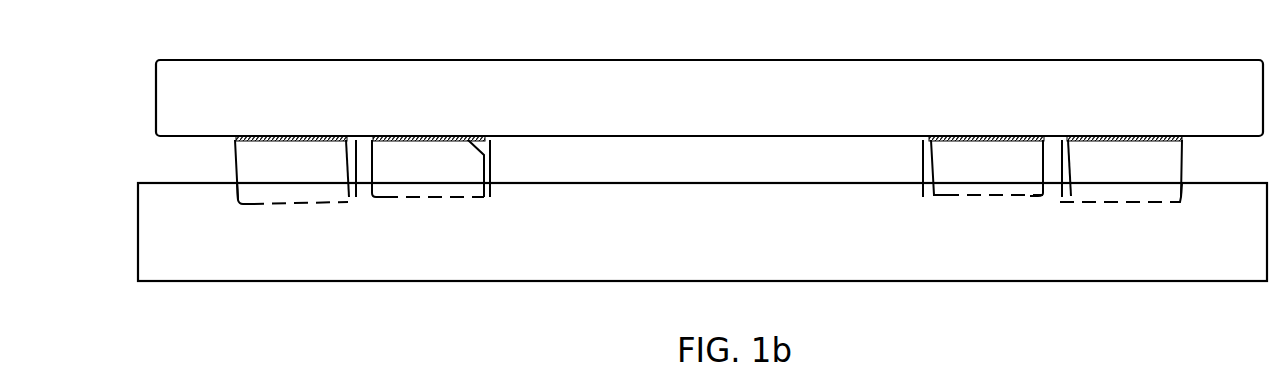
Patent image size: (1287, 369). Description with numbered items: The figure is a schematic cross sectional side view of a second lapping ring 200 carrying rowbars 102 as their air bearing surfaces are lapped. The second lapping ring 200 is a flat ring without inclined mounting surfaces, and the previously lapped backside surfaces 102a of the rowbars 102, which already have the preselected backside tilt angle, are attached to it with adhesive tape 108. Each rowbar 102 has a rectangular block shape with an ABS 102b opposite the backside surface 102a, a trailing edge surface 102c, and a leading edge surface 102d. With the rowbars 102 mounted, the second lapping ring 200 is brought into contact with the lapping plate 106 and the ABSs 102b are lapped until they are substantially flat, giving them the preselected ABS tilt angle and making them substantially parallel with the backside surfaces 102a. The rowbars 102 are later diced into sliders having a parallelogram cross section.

The second lapping ring 200 is at (982, 58).
The lapping plate 106 is at (820, 271).
The adhesive tape 108 is at (236, 139).
The rowbar 102 is at (315, 175).
The backside surface 102a is at (490, 158).
The ABS 102b is at (280, 205).
The trailing edge surface 102c is at (490, 190).
The leading edge surface 102d is at (236, 194).